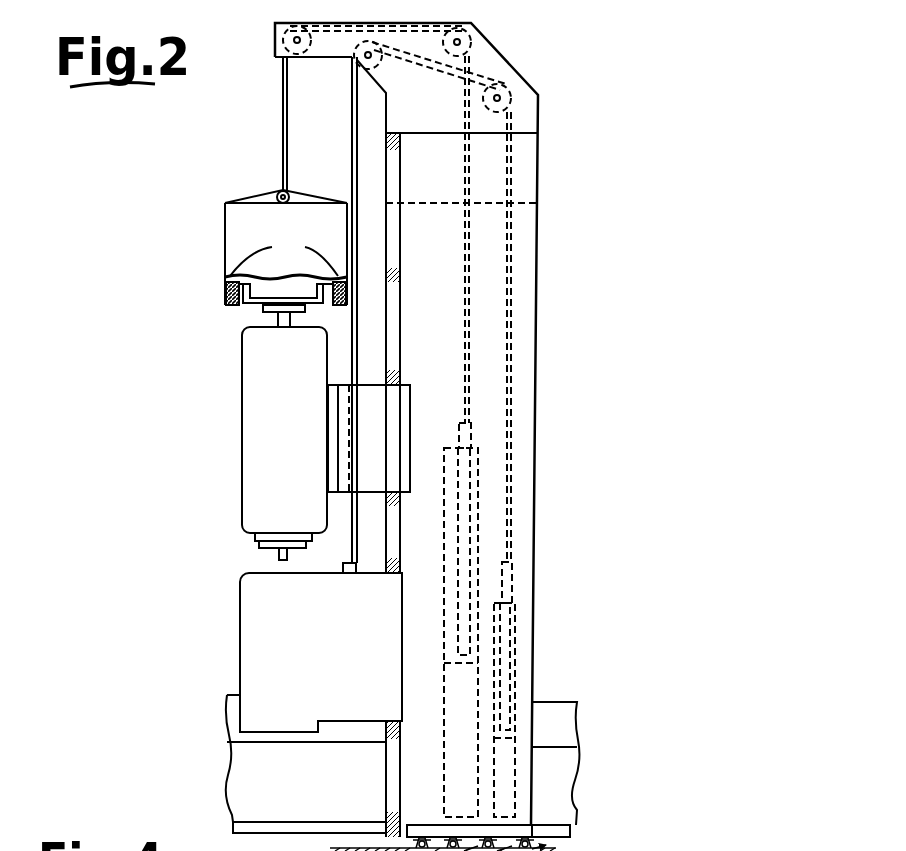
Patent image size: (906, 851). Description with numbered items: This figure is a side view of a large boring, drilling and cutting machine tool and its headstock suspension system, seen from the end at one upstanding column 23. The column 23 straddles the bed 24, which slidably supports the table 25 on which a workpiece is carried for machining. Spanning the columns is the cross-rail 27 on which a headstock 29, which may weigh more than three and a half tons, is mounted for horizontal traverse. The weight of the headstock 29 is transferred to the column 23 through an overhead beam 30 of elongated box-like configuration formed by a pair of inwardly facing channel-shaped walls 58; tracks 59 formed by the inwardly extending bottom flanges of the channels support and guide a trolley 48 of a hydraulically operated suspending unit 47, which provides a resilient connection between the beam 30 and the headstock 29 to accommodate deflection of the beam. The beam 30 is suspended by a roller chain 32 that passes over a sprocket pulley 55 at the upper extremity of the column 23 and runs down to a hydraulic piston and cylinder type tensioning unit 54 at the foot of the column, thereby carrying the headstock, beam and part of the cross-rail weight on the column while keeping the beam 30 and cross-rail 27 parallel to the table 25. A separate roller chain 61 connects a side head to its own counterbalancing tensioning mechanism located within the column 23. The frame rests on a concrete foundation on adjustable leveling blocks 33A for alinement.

The column 23 is at (522, 374).
The bed 24 is at (334, 802).
The table 25 is at (574, 735).
The cross-rail 27 is at (402, 426).
The headstock 29 is at (292, 460).
The beam 30 is at (232, 257).
The roller chain 32 is at (283, 110).
The leveling block 33A is at (426, 834).
The suspending unit 47 is at (247, 316).
The trolley 48 is at (250, 296).
The tensioning unit 54 is at (463, 681).
The sprocket pulley 55 is at (306, 56).
The channel-shaped wall 58 is at (286, 260).
The track 59 is at (226, 295).
The roller chain 61 is at (512, 300).